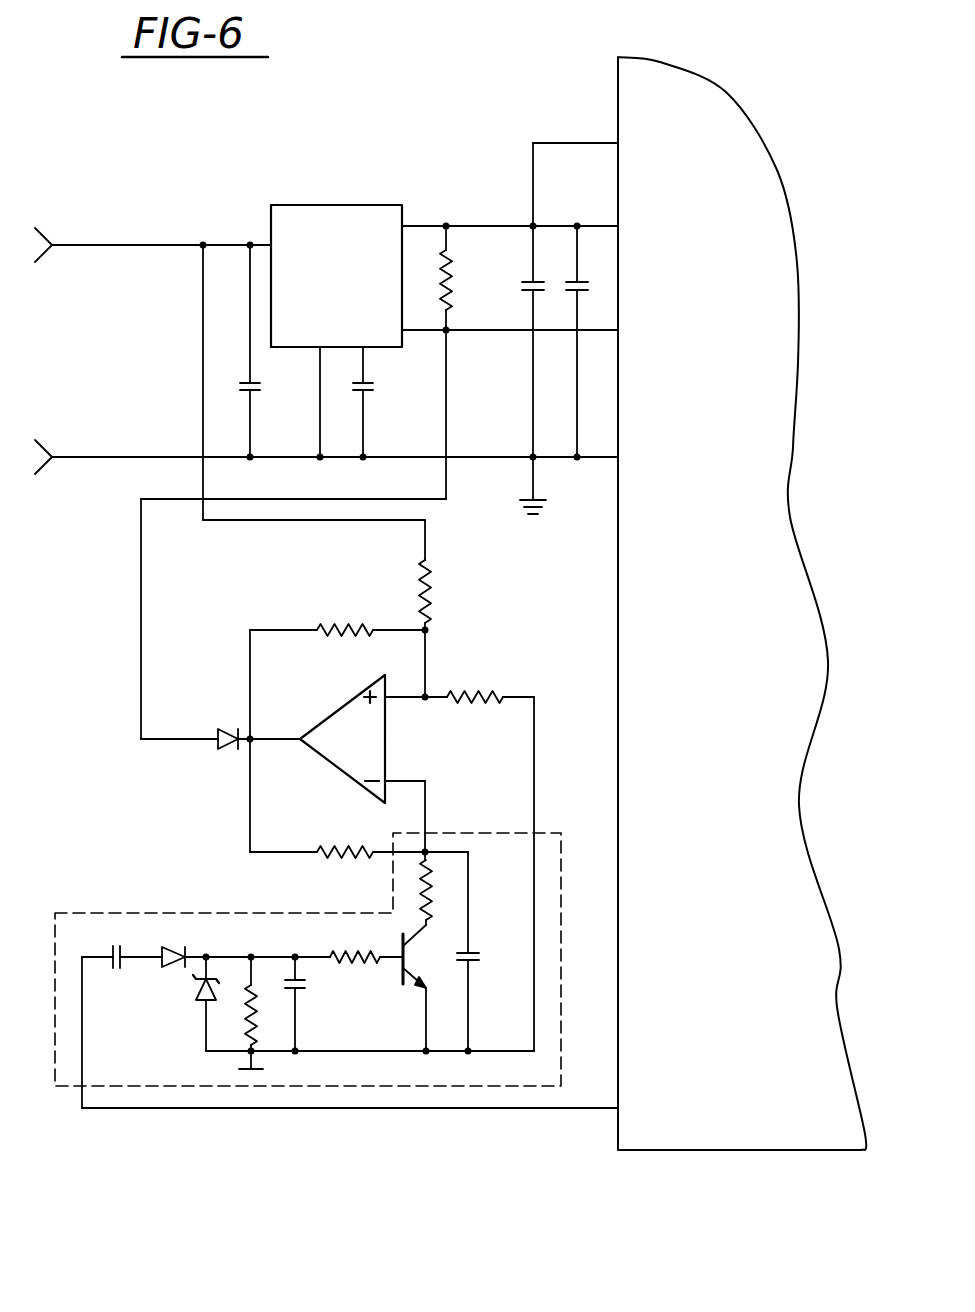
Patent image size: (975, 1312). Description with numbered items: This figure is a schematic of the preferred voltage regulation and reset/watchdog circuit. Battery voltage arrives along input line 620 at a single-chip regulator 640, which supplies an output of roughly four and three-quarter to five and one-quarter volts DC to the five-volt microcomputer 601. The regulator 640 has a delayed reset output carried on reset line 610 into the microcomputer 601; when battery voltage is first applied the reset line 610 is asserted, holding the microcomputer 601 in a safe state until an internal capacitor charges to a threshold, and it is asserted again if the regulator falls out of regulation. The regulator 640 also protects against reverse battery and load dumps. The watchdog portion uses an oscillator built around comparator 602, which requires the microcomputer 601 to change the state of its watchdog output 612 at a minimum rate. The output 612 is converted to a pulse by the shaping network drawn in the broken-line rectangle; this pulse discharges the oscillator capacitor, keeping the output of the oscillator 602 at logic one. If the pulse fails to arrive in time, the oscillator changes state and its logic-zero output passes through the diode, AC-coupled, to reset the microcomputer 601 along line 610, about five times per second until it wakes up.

The microcomputer 601 is at (737, 522).
The comparator 602 is at (385, 765).
The reset line 610 is at (597, 330).
The watchdog output 612 is at (413, 1108).
The input line 620 is at (160, 245).
The single-chip regulator 640 is at (338, 205).